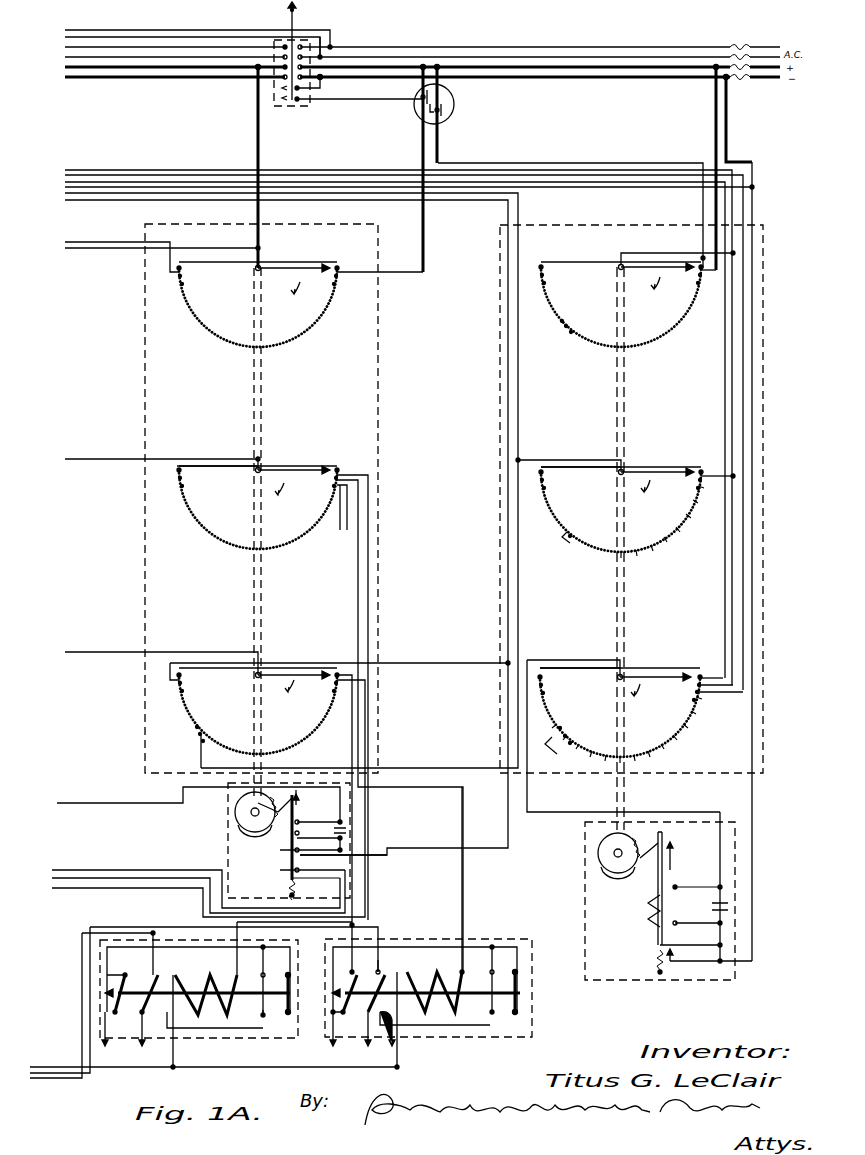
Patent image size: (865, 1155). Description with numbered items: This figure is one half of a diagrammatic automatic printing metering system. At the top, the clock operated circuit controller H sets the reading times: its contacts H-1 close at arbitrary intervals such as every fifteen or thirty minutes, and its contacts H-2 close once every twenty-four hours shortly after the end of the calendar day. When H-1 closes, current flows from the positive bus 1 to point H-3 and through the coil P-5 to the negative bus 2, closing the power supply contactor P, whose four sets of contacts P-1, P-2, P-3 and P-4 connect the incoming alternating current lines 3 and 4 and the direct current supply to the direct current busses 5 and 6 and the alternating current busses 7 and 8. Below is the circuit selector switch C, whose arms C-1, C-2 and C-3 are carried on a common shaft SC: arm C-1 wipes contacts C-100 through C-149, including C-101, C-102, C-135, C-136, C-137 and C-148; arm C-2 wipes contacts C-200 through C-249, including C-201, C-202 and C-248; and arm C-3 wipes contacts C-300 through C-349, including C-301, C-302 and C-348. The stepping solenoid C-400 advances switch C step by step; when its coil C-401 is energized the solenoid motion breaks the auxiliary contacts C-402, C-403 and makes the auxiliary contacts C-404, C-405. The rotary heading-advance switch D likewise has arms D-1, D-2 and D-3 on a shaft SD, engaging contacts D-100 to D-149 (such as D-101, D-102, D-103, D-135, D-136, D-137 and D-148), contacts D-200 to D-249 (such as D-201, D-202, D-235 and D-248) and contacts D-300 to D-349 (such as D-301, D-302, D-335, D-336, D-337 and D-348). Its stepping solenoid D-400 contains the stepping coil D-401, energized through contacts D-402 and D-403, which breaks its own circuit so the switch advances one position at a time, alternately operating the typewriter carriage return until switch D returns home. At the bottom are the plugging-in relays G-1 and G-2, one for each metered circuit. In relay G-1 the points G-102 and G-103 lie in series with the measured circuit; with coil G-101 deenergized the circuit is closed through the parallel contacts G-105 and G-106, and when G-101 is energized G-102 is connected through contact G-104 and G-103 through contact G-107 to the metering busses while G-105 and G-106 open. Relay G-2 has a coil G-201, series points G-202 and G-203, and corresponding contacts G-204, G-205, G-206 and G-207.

The positive bus 1 is at (518, 63).
The negative bus 2 is at (540, 73).
The AC supply line 3 is at (540, 43).
The AC supply line 4 is at (540, 53).
The positive direct current bus 5 is at (170, 67).
The direct current bus 6 is at (170, 77).
The alternating current bus 7 is at (193, 41).
The alternating current bus 8 is at (188, 50).
The power supply contactor P is at (324, 62).
The plug terminal P-1 is at (296, 20).
The plug terminal P-2 is at (282, 46).
The plug terminal P-3 is at (282, 68).
The plug terminal P-4 is at (283, 97).
The coil P-5 is at (305, 89).
The clock operated circuit controller H is at (478, 96).
The periodic contacts H-1 is at (418, 96).
The daily contacts H-2 is at (445, 116).
The point H-3 is at (427, 107).
The circuit selector switch C is at (281, 598).
The shaft of selector C SC is at (262, 395).
The arm C-3 is at (300, 297).
The contact C-300 is at (347, 258).
The contact C-349 is at (181, 275).
The contact C-348 is at (183, 283).
The contact C-301 is at (338, 276).
The contact C-302 is at (335, 284).
The arm C-2 is at (320, 713).
The contact C-200 is at (340, 465).
The contact C-249 is at (181, 478).
The contact C-248 is at (183, 486).
The contact C-201 is at (335, 477).
The contact C-202 is at (333, 486).
The arm C-1 is at (208, 783).
The contact C-100 is at (342, 650).
The contact C-149 is at (181, 683).
The contact C-148 is at (183, 691).
The contact C-101 is at (335, 682).
The contact C-102 is at (333, 691).
The contact C-137 is at (200, 727).
The contact C-136 is at (202, 734).
The contact C-135 is at (205, 741).
The stepping solenoid C-400 is at (225, 848).
The stepping coil C-401 is at (320, 835).
The auxiliary contact C-402 is at (311, 845).
The auxiliary contact C-403 is at (350, 845).
The auxiliary contact C-404 is at (312, 865).
The auxiliary contact C-405 is at (314, 885).
The rotary heading-advance switch D is at (616, 527).
The shaft of selector D SD is at (622, 395).
The arm D-3 is at (637, 300).
The contact D-300 is at (705, 268).
The contact D-349 is at (543, 275).
The contact D-348 is at (545, 283).
The contact D-301 is at (699, 275).
The contact D-302 is at (697, 284).
The contact D-336 is at (568, 328).
The contact D-337 is at (562, 330).
The contact D-335 is at (572, 337).
The arm D-2 is at (625, 502).
The contact D-200 is at (707, 458).
The contact D-249 is at (543, 480).
The contact D-248 is at (545, 488).
The contact D-201 is at (699, 477).
The contact D-202 is at (697, 488).
The contact D-235 is at (572, 536).
The arm D-1 is at (635, 730).
The contact D-100 is at (702, 676).
The contact D-149 is at (542, 685).
The contact D-148 is at (544, 693).
The contact D-101 is at (697, 684).
The contact D-102 is at (695, 692).
The contact D-103 is at (693, 700).
The contact D-137 is at (562, 731).
The contact D-136 is at (566, 737).
The contact D-135 is at (572, 744).
The stepping solenoid D-400 is at (650, 896).
The stepping coil D-401 is at (685, 906).
The contact D-402 is at (697, 930).
The contact D-403 is at (694, 953).
The plugging-in relay G-1 is at (213, 1000).
The coil G-101 is at (206, 986).
The point G-102 is at (112, 1035).
The point G-103 is at (152, 1035).
The contact G-104 is at (125, 1008).
The contact G-105 is at (262, 997).
The contact G-106 is at (286, 1012).
The contact G-107 is at (150, 1013).
The plug-in relay G-2 is at (434, 928).
The coil G-201 is at (434, 985).
The point G-202 is at (333, 1043).
The point G-203 is at (387, 1032).
The relay contact G-204 is at (350, 1006).
The relay contact G-205 is at (490, 998).
The relay contact G-206 is at (520, 1002).
The relay contact G-207 is at (380, 1032).